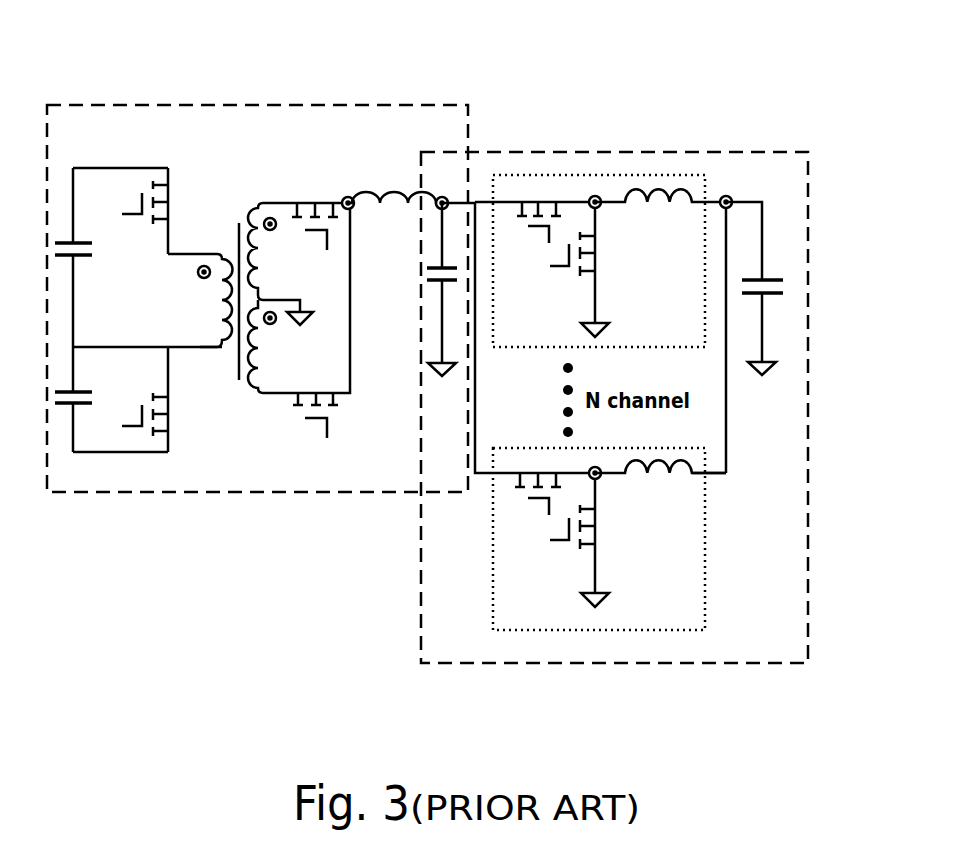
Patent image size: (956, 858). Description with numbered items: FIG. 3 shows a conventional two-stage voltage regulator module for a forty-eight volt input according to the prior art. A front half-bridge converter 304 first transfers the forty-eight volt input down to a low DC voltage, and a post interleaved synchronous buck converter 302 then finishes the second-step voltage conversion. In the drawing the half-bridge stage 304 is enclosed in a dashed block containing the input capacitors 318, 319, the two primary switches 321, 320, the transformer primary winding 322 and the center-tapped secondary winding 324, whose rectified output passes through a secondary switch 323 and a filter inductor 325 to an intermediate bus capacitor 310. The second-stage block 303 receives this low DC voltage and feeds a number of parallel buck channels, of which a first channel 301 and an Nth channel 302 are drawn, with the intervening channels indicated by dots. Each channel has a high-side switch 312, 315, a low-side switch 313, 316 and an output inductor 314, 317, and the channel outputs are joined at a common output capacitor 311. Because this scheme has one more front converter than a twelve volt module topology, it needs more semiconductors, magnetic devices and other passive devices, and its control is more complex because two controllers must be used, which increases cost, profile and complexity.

The first output channel 301 is at (630, 168).
The post interleaved synchronous buck converter 302 is at (487, 598).
The multi-channel buck converter stage 303 is at (500, 142).
The front half-bridge converter 304 is at (264, 95).
The intermediate bus capacitor 310 is at (414, 289).
The output capacitor 311 is at (764, 288).
The high-side switch 312 is at (551, 229).
The low-side switch 313 is at (567, 269).
The output inductor 314 is at (660, 213).
The high-side switch 315 is at (548, 504).
The low-side switch 316 is at (568, 540).
The output inductor 317 is at (660, 489).
The input capacitor 318 is at (89, 257).
The input capacitor 319 is at (87, 399).
The primary switch 320 is at (168, 399).
The primary switch 321 is at (166, 211).
The transformer primary winding 322 is at (200, 319).
The secondary rectifier switch 323 is at (320, 204).
The transformer secondary winding 324 is at (284, 298).
The filter inductor 325 is at (395, 179).